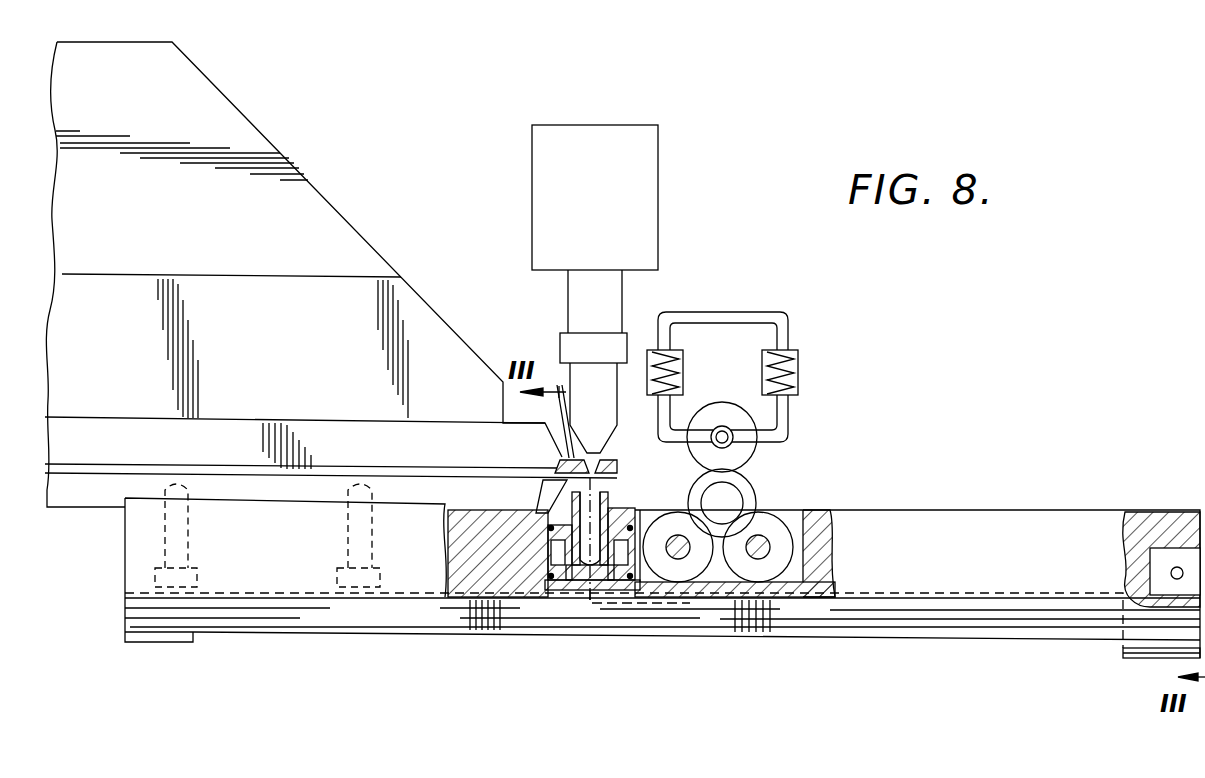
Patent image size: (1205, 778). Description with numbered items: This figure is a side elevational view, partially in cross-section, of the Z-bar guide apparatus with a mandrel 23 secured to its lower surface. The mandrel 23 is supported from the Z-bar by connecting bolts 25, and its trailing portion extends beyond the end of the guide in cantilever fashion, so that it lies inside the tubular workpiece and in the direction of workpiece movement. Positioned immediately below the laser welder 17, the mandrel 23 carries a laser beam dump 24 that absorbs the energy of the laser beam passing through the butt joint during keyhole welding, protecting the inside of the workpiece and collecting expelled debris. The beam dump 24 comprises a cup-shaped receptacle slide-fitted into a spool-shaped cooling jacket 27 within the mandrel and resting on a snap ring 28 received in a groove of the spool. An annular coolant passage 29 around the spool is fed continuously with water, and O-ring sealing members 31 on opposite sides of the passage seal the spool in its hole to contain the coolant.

The laser welder 17 is at (657, 196).
The mandrel 23 is at (125, 593).
The laser beam dump 24 is at (611, 608).
The connecting bolts 25 is at (337, 577).
The cooling jacket 27 is at (533, 590).
The snap ring 28 is at (565, 592).
The annular coolant passage 29 is at (546, 540).
The O-ring sealing members 31 is at (432, 477).